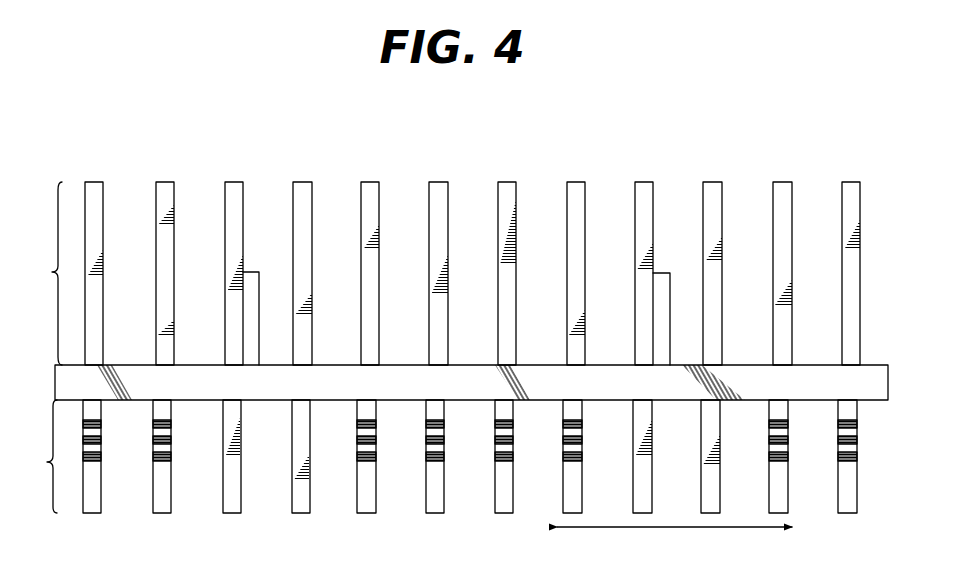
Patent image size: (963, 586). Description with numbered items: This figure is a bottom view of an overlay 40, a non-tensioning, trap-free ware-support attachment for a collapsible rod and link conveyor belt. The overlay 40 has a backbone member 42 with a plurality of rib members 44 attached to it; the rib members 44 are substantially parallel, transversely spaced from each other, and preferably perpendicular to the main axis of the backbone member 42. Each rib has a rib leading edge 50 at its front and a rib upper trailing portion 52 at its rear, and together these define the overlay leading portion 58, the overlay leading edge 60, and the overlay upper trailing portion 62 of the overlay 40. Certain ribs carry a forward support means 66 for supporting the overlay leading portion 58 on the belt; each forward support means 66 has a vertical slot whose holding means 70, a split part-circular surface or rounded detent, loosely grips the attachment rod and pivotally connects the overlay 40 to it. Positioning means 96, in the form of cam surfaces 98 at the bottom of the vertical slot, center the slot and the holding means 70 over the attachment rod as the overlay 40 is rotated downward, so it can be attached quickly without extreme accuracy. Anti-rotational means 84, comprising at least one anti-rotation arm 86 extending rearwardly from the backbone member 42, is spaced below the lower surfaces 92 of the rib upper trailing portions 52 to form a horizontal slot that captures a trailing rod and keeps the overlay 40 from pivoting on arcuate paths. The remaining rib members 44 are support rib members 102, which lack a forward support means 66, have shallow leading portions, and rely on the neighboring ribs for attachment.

The overlay 40 is at (683, 142).
The backbone member 42 is at (863, 378).
The rib members 44 is at (633, 180).
The rib leading edge 50 is at (163, 513).
The rib upper trailing portion 52 is at (103, 195).
The overlay leading portion 58 is at (40, 456).
The overlay leading edge 60 is at (674, 536).
The overlay upper trailing portion 62 is at (44, 273).
The forward support means 66 is at (78, 448).
The holding means 70 is at (510, 444).
The anti-rotational means 84 is at (262, 293).
The anti-rotation arm 86 is at (249, 270).
The lower surfaces 92 is at (847, 268).
The positioning means 96 is at (492, 430).
The cam surfaces 98 is at (357, 430).
The support rib members 102 is at (238, 478).